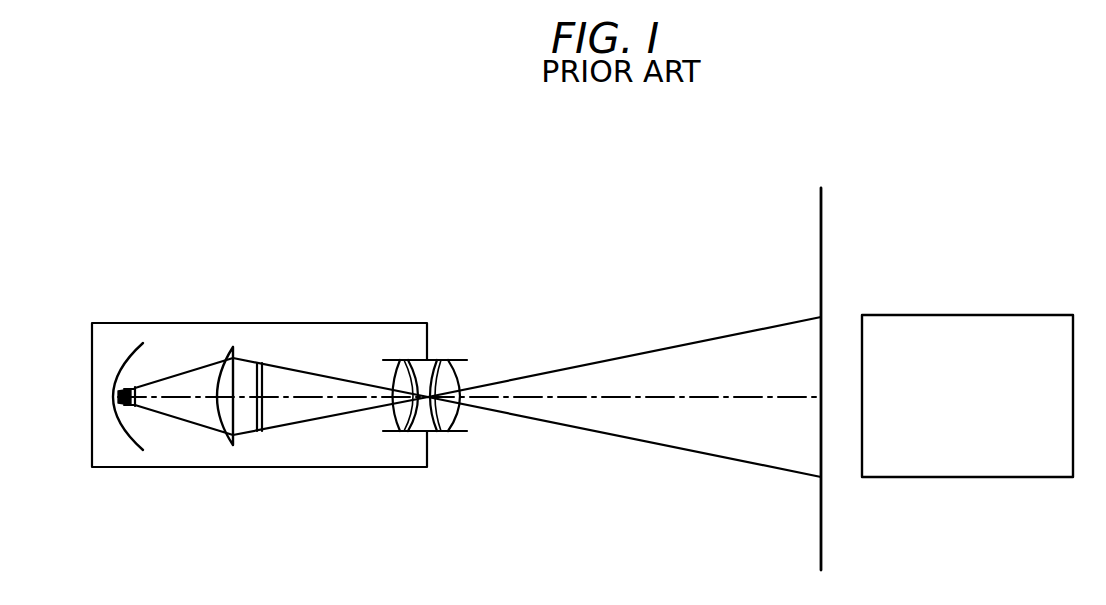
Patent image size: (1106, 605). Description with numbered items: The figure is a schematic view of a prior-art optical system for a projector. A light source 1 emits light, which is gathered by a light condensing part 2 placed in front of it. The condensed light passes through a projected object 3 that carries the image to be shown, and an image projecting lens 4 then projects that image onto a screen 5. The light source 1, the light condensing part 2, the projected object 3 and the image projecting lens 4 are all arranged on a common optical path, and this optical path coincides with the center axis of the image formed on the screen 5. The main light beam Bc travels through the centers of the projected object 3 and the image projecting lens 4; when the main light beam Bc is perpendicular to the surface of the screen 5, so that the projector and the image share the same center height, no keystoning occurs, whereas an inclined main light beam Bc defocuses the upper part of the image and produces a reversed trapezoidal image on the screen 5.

The light source 1 is at (125, 358).
The light condensing part 2 is at (227, 360).
The projected object 3 is at (267, 378).
The image projecting lens 4 is at (448, 375).
The screen 5 is at (821, 262).
The main light beam Bc is at (660, 395).